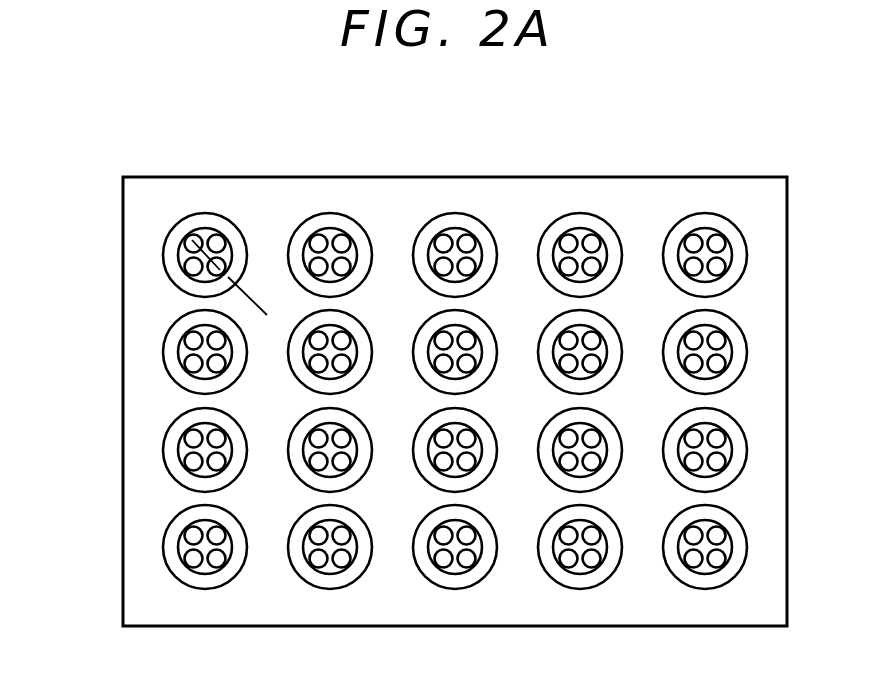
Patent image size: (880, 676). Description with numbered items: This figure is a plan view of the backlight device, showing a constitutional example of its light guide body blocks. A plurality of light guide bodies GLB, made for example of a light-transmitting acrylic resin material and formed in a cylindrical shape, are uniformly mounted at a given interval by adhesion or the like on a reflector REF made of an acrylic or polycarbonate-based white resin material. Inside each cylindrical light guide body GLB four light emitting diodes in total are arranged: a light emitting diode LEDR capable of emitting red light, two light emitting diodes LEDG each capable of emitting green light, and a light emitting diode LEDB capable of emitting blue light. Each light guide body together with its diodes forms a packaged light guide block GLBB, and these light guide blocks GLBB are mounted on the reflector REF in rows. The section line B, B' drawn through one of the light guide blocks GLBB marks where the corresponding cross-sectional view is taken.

The reflector REF is at (660, 188).
The light guide block GLBB is at (196, 208).
The light guide body GLB is at (247, 250).
The light emitting diode LEDR is at (191, 243).
The light emitting diode LEDG is at (231, 242).
The light emitting diode LEDB is at (214, 268).
The line B-B' B is at (180, 230).
The line B- B' is at (256, 308).